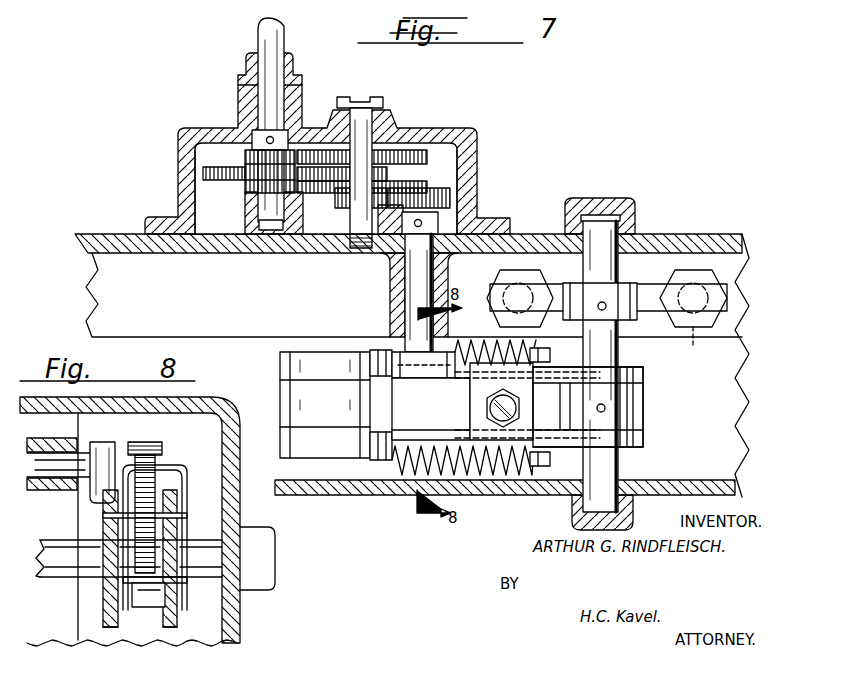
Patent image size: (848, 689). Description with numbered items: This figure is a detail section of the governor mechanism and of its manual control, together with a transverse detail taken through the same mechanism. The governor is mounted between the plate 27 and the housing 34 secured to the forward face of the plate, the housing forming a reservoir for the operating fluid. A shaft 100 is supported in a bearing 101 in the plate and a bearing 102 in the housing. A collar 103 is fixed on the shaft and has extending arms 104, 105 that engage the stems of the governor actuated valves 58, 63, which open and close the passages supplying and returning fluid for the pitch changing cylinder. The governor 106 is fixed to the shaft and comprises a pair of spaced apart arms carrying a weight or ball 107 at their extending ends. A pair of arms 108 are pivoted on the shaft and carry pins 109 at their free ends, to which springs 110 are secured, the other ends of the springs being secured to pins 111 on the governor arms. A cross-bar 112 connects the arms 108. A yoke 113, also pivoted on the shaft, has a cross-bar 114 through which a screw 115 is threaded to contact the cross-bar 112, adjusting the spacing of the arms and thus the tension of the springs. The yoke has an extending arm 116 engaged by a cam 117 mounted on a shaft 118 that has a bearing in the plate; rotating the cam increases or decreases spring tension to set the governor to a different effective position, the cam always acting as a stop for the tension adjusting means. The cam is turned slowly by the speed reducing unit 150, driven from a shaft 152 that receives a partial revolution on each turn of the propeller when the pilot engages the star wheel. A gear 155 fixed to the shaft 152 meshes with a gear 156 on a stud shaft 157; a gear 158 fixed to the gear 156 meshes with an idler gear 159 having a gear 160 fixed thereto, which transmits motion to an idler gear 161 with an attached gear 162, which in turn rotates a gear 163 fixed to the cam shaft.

In FIG. 7, the plate 27 is at (728, 236).
In FIG. 8, the plate 27 is at (56, 636).
In FIG. 7, the housing 34 is at (726, 402).
In FIG. 8, the housing 34 is at (232, 629).
In FIG. 7, the governor actuated valve 58 is at (697, 344).
In FIG. 7, the governor actuated valve 63 is at (527, 304).
In FIG. 7, the shaft 100 is at (612, 268).
In FIG. 8, the shaft 100 is at (60, 578).
In FIG. 7, the bearing 101 is at (620, 232).
In FIG. 7, the bearing 102 is at (632, 492).
In FIG. 7, the collar 103 is at (632, 314).
In FIG. 7, the arm 104 is at (740, 275).
In FIG. 7, the arm 105 is at (525, 295).
In FIG. 7, the governor 106 is at (643, 407).
In FIG. 8, the governor 106 is at (182, 487).
In FIG. 7, the weight or ball 107 is at (310, 452).
In FIG. 7, the arms 108 is at (628, 372).
In FIG. 8, the arms 108 is at (115, 626).
In FIG. 7, the pins 109 is at (550, 353).
In FIG. 7, the springs 110 is at (465, 342).
In FIG. 7, the pins 111 is at (380, 350).
In FIG. 8, the cross-bar 112 is at (146, 598).
In FIG. 7, the yoke 113 is at (643, 372).
In FIG. 8, the yoke 113 is at (186, 478).
In FIG. 7, the cross-bar 114 is at (541, 395).
In FIG. 8, the cross-bar 114 is at (176, 462).
In FIG. 7, the screw 115 is at (490, 410).
In FIG. 8, the screw 115 is at (148, 446).
In FIG. 7, the arm 116 is at (462, 370).
In FIG. 8, the arm 116 is at (108, 530).
In FIG. 7, the cam 117 is at (408, 378).
In FIG. 8, the cam 117 is at (102, 448).
In FIG. 7, the shaft 118 is at (410, 292).
In FIG. 8, the shaft 118 is at (50, 480).
In FIG. 7, the speed reducing unit 150 is at (394, 128).
In FIG. 7, the shaft 152 is at (283, 38).
In FIG. 7, the gear 155 is at (232, 140).
In FIG. 7, the gear 156 is at (466, 156).
In FIG. 7, the stud shaft 157 is at (368, 122).
In FIG. 7, the gear 158 is at (387, 172).
In FIG. 7, the idler gear 159 is at (203, 172).
In FIG. 7, the gear 160 is at (250, 186).
In FIG. 7, the idler gear 161 is at (430, 187).
In FIG. 7, the gear 162 is at (340, 200).
In FIG. 7, the gear 163 is at (450, 200).